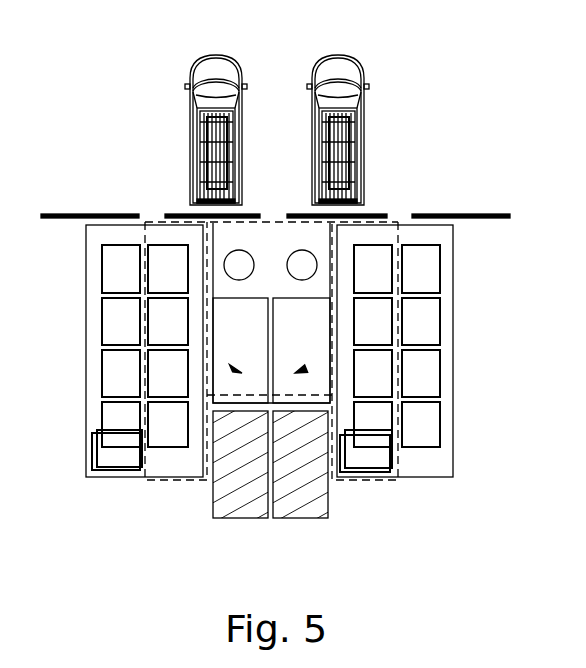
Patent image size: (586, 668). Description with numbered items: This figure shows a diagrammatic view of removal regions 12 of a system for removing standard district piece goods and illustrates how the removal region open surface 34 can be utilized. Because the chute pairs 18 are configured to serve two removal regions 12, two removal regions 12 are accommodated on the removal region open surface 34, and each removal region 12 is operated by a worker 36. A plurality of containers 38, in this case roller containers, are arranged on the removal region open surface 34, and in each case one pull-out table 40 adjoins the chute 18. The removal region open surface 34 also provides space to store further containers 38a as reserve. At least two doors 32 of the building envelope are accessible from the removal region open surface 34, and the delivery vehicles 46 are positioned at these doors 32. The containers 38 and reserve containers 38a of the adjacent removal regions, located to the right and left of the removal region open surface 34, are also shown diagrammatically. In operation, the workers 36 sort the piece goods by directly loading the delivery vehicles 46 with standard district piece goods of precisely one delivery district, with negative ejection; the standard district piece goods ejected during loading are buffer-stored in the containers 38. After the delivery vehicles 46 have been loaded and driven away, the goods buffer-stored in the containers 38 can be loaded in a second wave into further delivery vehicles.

The removal region 12 is at (236, 370).
The chute 18 is at (238, 507).
The door 32 is at (176, 211).
The removal region open surface 34 is at (188, 481).
The worker 36 is at (241, 258).
The container 38 is at (417, 275).
The reserve container 38a is at (118, 460).
The pull-out table 40 is at (233, 317).
The delivery vehicle 46 is at (192, 68).